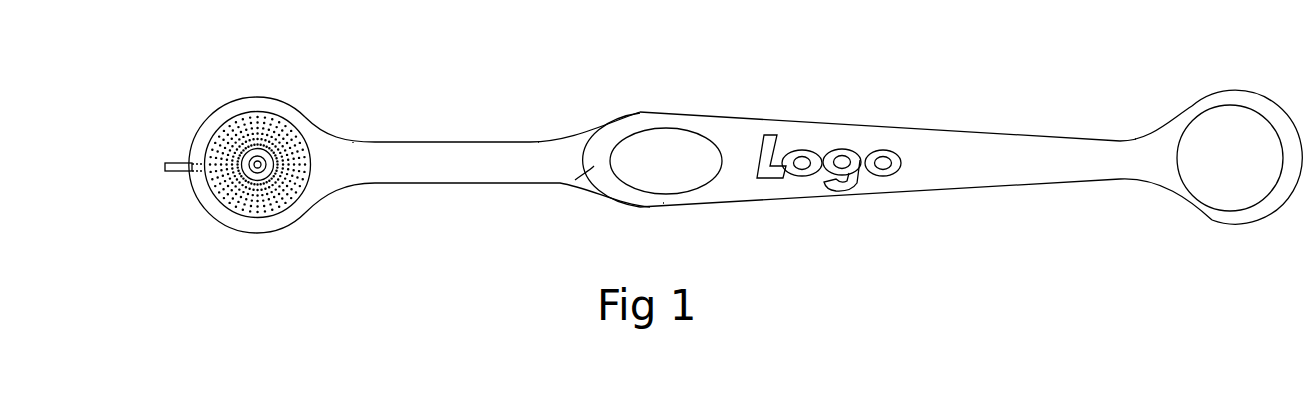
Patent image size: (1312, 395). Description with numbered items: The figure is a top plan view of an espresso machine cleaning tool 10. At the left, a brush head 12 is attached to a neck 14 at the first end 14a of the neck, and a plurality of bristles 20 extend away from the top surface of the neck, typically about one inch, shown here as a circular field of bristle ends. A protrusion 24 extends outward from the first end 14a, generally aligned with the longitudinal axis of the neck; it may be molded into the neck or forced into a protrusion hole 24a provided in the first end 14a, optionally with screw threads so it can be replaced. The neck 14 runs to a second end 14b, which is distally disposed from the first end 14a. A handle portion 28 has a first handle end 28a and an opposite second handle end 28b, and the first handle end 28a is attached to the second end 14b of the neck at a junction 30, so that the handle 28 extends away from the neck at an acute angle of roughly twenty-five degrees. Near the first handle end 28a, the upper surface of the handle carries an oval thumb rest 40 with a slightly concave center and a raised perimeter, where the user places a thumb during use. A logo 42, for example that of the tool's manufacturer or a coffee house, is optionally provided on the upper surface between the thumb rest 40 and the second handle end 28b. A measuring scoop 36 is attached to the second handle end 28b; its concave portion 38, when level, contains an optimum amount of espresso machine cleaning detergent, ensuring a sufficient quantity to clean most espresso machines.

The espresso machine cleaning tool 10 is at (750, 95).
The brush head 12 is at (302, 127).
The neck 14 is at (430, 163).
The first end of the neck 14a is at (353, 165).
The second end of the neck 14b is at (538, 155).
The bristles 20 is at (238, 197).
The protrusion 24 is at (175, 155).
The protrusion hole 24a is at (198, 172).
The handle portion 28 is at (988, 202).
The first handle end 28a is at (663, 203).
The second handle end 28b is at (1135, 157).
The junction 30 is at (575, 180).
The measuring scoop 36 is at (1228, 227).
The concave portion 38 is at (1247, 145).
The thumb rest 40 is at (665, 148).
The logo 42 is at (802, 150).